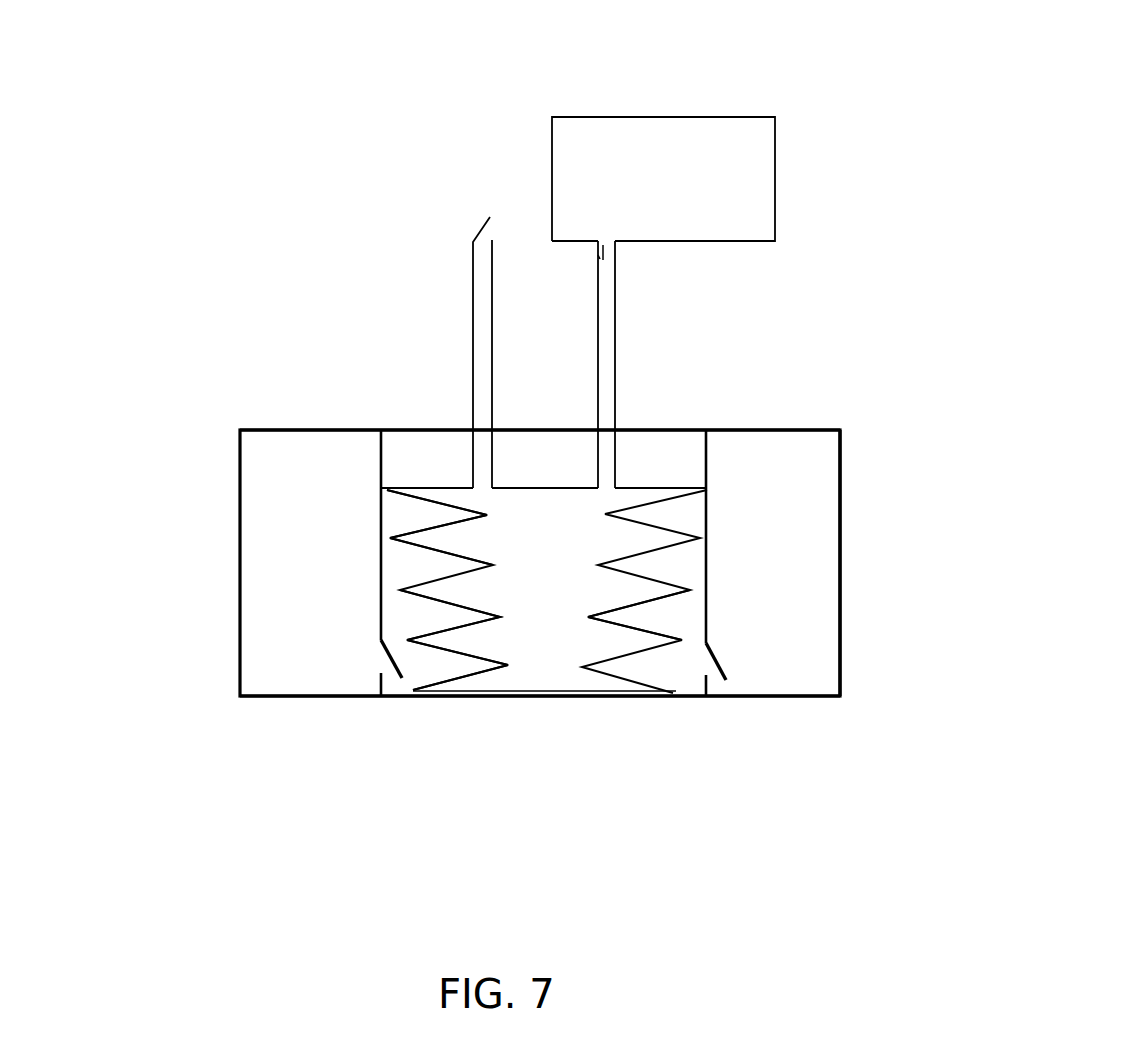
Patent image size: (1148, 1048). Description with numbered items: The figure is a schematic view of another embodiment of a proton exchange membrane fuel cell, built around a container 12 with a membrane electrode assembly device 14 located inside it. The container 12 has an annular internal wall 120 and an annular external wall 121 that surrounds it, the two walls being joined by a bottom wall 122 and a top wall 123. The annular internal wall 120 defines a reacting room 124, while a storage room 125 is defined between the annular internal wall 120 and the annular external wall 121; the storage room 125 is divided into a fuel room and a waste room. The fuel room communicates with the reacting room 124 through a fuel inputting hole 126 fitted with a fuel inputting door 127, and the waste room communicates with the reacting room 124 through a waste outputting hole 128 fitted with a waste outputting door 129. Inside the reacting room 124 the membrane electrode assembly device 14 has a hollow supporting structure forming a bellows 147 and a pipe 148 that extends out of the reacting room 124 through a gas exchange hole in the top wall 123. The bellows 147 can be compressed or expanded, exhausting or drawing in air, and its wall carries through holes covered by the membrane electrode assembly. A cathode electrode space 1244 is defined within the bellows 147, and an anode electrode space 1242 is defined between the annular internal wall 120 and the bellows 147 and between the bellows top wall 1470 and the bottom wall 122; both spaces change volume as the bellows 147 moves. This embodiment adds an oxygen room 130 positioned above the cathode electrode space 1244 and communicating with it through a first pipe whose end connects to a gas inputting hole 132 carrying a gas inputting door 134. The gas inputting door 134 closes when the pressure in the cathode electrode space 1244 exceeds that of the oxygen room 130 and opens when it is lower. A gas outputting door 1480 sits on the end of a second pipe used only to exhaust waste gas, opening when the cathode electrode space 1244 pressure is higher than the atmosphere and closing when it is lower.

The container 12 is at (233, 517).
The membrane electrode assembly device 14 is at (675, 566).
The annular internal wall 120 is at (708, 515).
The annular external wall 121 is at (842, 585).
The bottom wall 122 is at (268, 698).
The top wall 123 is at (342, 427).
The reacting room 124 is at (126, 593).
The anode electrode space 1242 is at (407, 567).
The cathode electrode space 1244 is at (493, 592).
The storage room 125 is at (275, 550).
The fuel inputting hole 126 is at (382, 662).
The fuel inputting door 127 is at (393, 673).
The waste outputting hole 128 is at (705, 660).
The waste outputting door 129 is at (727, 670).
The oxygen room 130 is at (755, 178).
The gas inputting hole 132 is at (603, 245).
The gas inputting door 134 is at (600, 256).
The bellows 147 is at (663, 607).
The bellows top wall 1470 is at (643, 487).
The pipe 148 is at (597, 347).
The gas outputting door 1480 is at (483, 228).